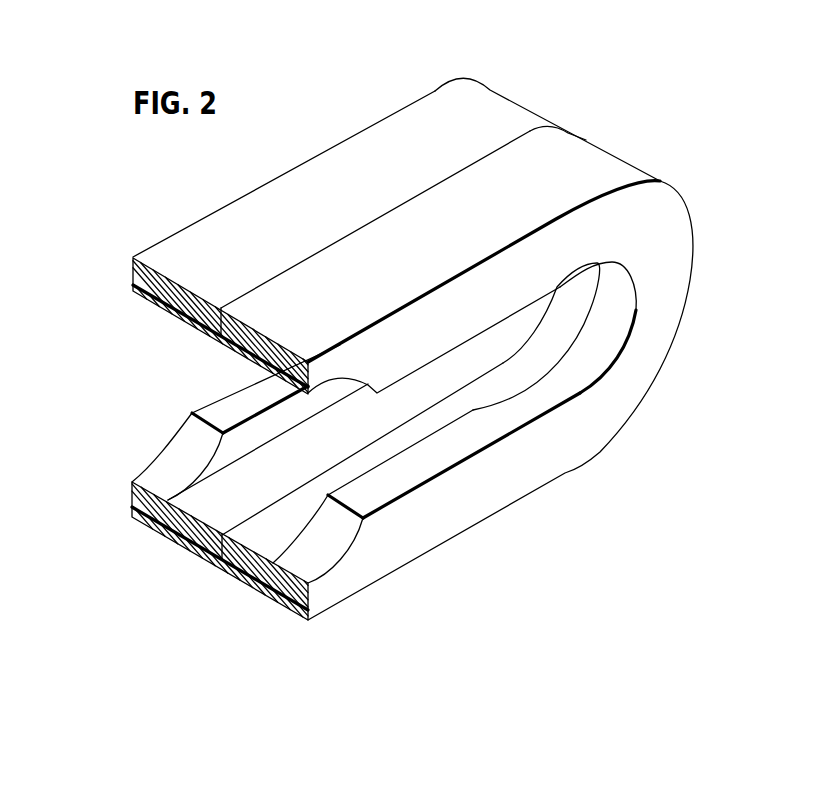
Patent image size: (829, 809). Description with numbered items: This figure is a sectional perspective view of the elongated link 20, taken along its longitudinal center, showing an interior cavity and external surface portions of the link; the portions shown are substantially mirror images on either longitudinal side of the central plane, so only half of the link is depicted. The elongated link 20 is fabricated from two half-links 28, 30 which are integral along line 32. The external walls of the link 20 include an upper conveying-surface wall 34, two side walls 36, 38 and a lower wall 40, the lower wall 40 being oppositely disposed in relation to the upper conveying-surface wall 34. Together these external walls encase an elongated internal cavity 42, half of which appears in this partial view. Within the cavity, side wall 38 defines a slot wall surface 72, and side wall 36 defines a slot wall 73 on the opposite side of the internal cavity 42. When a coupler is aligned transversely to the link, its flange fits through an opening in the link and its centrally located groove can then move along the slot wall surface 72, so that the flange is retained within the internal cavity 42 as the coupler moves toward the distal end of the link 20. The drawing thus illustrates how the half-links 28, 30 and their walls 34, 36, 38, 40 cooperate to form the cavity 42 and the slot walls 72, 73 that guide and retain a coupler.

The elongated link 20 is at (133, 564).
The half-link 28 is at (338, 153).
The half-link 30 is at (532, 222).
The line 32 is at (537, 130).
The upper conveying-surface wall 34 is at (476, 116).
The side wall 36 is at (190, 453).
The side wall 38 is at (589, 417).
The lower wall 40 is at (377, 558).
The internal cavity 42 is at (222, 362).
The slot wall surface 72 is at (517, 410).
The slot wall 73 is at (275, 390).